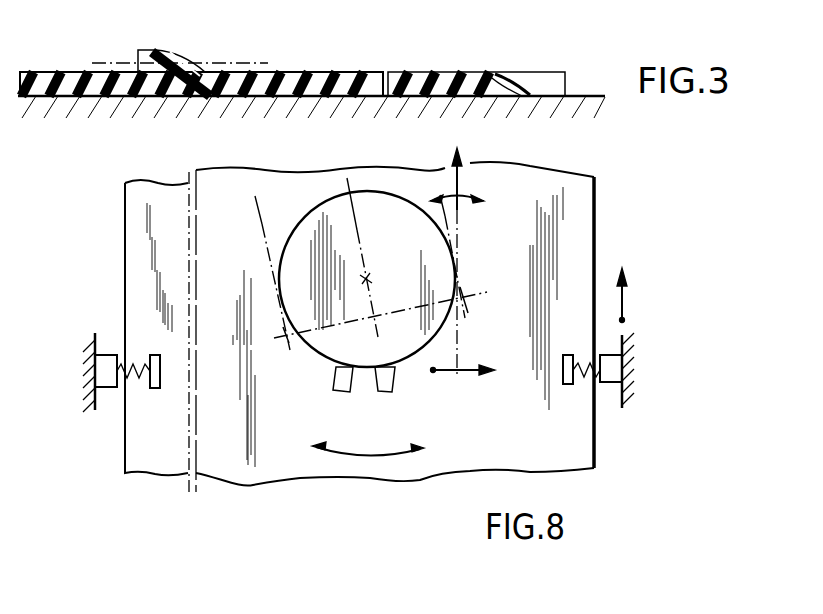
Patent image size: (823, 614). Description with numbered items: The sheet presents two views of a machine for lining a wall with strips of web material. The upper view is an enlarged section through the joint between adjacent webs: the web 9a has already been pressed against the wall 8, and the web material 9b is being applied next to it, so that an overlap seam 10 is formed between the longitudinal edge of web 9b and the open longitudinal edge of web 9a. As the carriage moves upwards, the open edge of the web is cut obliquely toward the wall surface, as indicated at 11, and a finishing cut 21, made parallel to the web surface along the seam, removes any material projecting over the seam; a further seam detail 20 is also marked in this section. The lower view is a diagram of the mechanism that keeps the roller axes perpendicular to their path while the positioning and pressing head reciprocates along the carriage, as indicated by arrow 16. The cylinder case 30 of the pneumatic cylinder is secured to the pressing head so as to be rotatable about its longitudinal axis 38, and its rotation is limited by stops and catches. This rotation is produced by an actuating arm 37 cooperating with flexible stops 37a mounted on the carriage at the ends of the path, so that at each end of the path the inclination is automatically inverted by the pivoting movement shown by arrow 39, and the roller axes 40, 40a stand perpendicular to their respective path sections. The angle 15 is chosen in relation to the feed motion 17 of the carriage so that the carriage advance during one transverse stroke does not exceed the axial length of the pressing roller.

In FIG. 3, the wall 8 is at (44, 100).
In FIG. 3, the web 9a is at (68, 72).
In FIG. 3, the web material 9b is at (355, 72).
In FIG. 8, the web material 9b is at (590, 232).
In FIG. 3, the overlap seam 10 is at (203, 70).
In FIG. 3, the obliquely cut edge 11 is at (517, 92).
In FIG. 8, the angle 15 is at (464, 196).
In FIG. 8, the arrow 16 is at (457, 376).
In FIG. 8, the feed motion 17 is at (622, 303).
In FIG. 3, the joint element 20 is at (165, 60).
In FIG. 3, the cut 21 is at (104, 62).
In FIG. 8, the cylinder case 30 is at (306, 346).
In FIG. 8, the actuating arm 37 is at (389, 392).
In FIG. 8, the flexible stops 37a is at (138, 378).
In FIG. 8, the longitudinal axis 38 is at (367, 279).
In FIG. 8, the arrow 39 is at (358, 456).
In FIG. 8, the roller axis 40 is at (348, 192).
In FIG. 8, the roller axis 40a is at (262, 225).